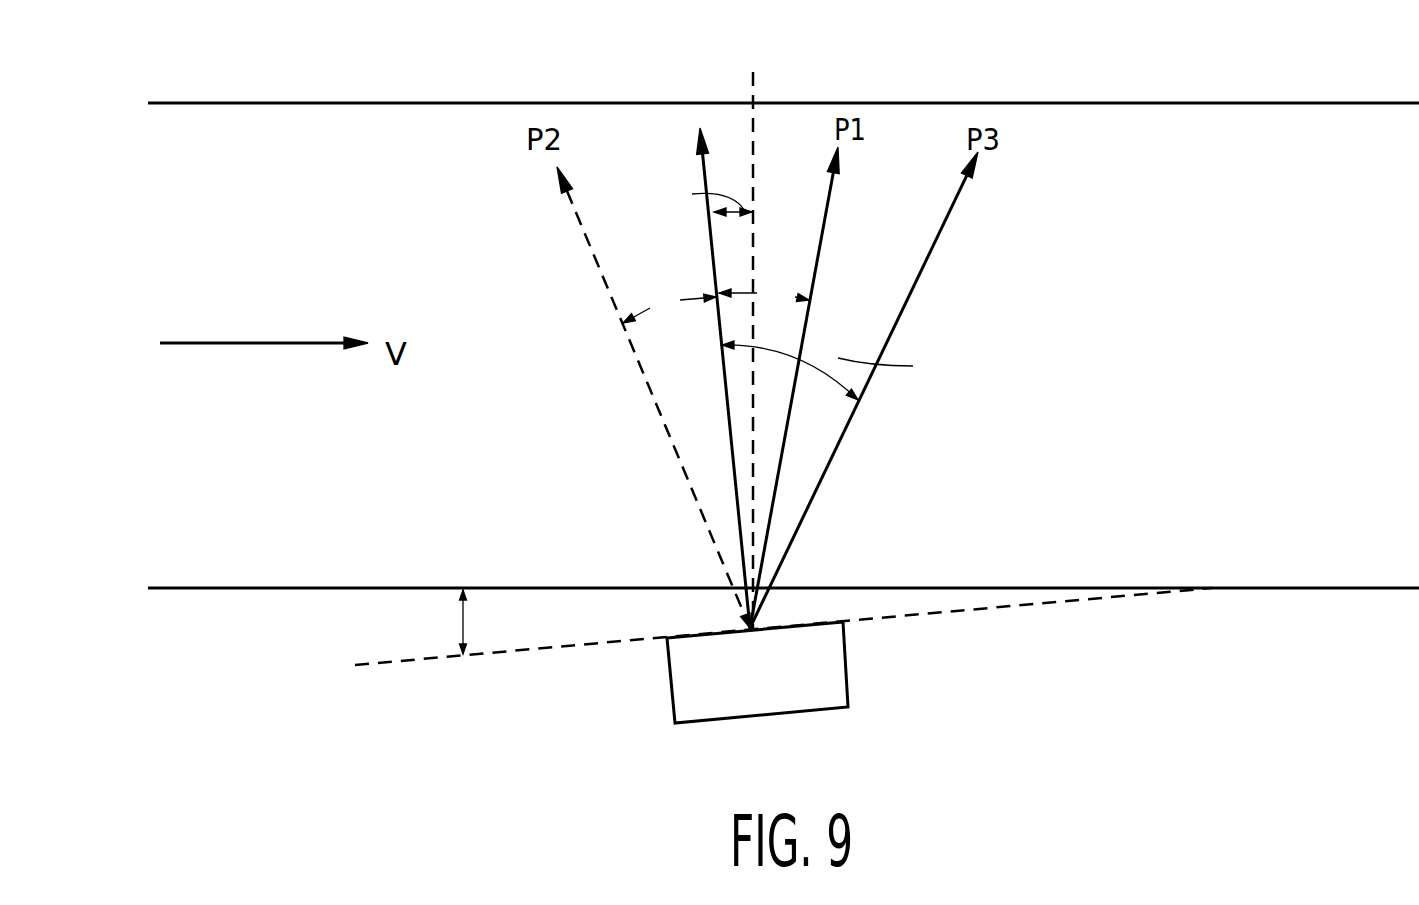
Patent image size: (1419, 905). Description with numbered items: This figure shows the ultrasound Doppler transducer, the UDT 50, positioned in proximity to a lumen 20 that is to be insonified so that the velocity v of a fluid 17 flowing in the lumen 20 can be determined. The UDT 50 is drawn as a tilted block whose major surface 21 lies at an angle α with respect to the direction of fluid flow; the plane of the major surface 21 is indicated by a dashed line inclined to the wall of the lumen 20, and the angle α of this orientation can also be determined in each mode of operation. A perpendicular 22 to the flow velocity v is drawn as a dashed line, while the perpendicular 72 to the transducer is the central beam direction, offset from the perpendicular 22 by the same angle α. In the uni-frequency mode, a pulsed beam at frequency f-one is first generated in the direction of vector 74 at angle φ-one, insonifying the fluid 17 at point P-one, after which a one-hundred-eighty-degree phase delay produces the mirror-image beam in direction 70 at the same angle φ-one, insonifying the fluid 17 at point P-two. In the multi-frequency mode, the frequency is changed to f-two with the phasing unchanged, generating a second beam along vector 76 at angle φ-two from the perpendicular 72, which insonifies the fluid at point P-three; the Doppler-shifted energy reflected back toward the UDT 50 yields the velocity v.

The fluid 17 is at (281, 343).
The lumen 20 is at (1222, 103).
The major surface 21 is at (410, 662).
The perpendicular 22 is at (757, 143).
The UDT 50 is at (827, 695).
The direction 70 is at (586, 240).
The perpendicular 72 is at (704, 170).
The vector 74 is at (830, 197).
The vector 76 is at (946, 218).